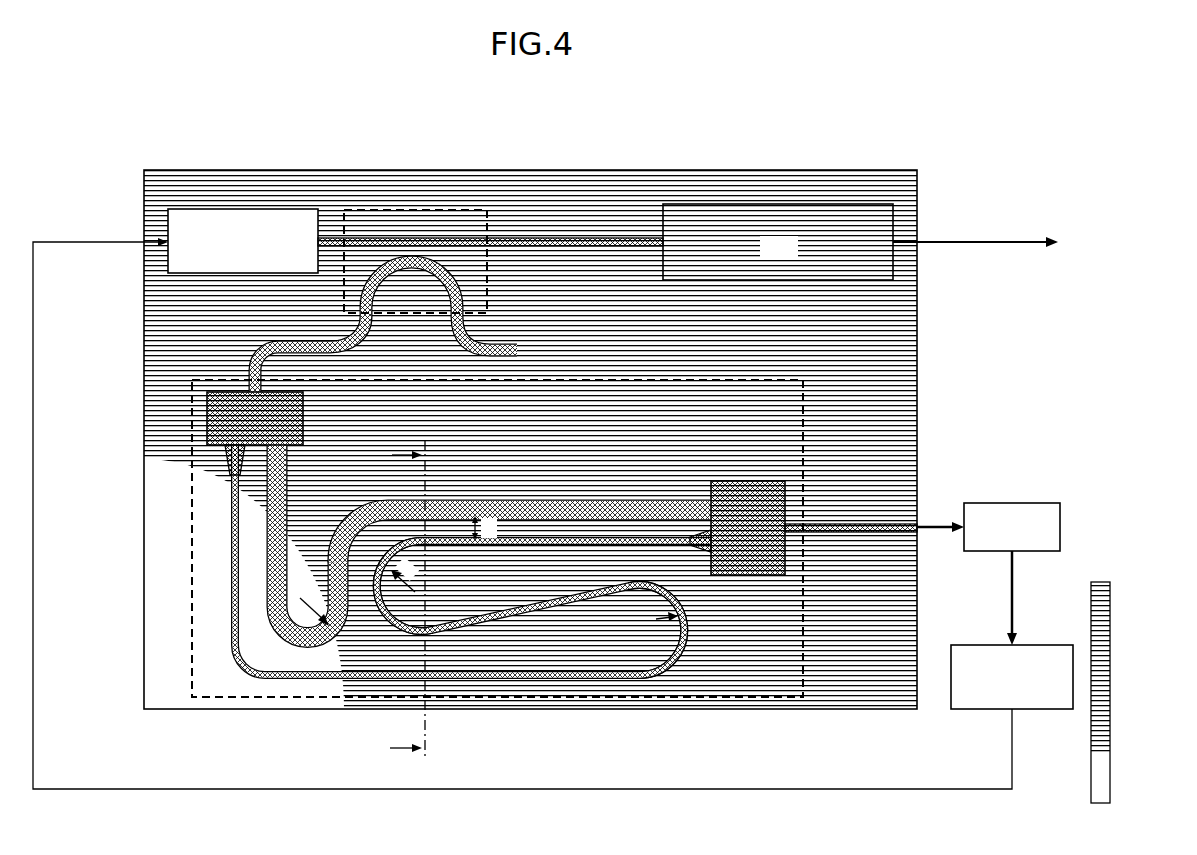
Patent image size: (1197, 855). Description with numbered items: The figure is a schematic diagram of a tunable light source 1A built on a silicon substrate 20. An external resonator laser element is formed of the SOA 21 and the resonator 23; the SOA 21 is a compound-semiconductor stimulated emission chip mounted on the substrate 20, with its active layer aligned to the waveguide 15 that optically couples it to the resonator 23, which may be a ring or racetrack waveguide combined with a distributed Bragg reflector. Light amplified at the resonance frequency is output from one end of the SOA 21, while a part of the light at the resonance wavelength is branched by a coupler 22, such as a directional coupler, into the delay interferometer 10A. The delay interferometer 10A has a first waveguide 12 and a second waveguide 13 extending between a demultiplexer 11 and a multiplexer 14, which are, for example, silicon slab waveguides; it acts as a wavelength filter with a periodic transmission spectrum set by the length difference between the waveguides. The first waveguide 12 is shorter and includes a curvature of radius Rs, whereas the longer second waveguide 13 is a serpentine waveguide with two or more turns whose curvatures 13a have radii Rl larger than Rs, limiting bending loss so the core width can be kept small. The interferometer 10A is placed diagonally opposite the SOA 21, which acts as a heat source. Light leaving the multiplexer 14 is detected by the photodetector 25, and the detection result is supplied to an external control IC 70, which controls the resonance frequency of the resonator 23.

The tunable light source 1A is at (1086, 122).
The silicon substrate 20 is at (806, 171).
The resonator 23 is at (268, 209).
The coupler 22 is at (420, 212).
The waveguide 15 is at (490, 216).
The SOA 21 is at (848, 281).
The delay interferometer 10A is at (720, 381).
The demultiplexer 11 is at (303, 420).
The first waveguide 12 is at (637, 499).
The second waveguide 13 is at (500, 560).
The curvature 13a is at (369, 614).
The multiplexer 14 is at (746, 481).
The photodetector 25 is at (1012, 503).
The control IC 70 is at (1030, 646).